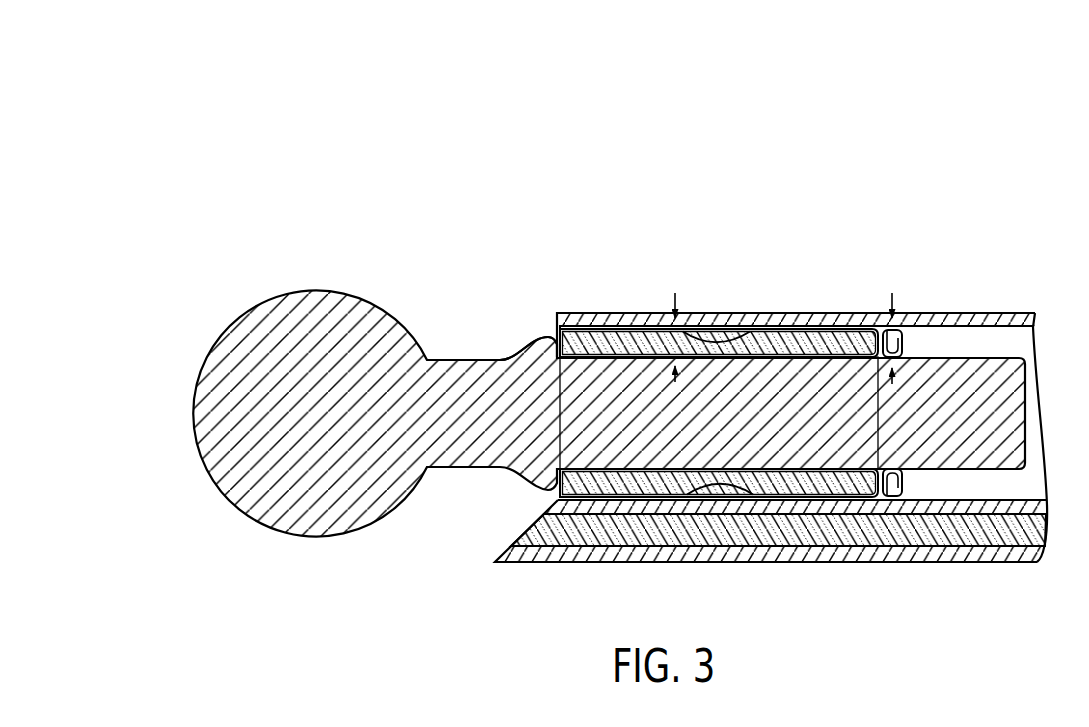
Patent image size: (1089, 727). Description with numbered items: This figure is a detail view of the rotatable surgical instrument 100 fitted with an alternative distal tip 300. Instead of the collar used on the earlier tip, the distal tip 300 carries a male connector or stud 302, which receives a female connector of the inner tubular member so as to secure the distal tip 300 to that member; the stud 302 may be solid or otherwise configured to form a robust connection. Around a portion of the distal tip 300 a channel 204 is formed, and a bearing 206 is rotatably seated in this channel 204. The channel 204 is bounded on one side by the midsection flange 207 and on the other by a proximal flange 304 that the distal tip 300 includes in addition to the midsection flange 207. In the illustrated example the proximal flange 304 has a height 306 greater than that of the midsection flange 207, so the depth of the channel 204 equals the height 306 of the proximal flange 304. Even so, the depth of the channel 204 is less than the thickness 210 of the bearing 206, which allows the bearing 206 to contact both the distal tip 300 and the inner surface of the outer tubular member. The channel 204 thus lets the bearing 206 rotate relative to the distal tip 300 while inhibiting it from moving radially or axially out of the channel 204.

The rotatable surgical instrument 100 is at (355, 115).
The alternative distal tip 300 is at (308, 210).
The channel 204 is at (563, 341).
The bearing 206 is at (667, 486).
The midsection flange 207 is at (540, 340).
The thickness 210 is at (668, 346).
The stud 302 is at (1000, 395).
The proximal flange 304 is at (881, 343).
The height 306 is at (894, 346).